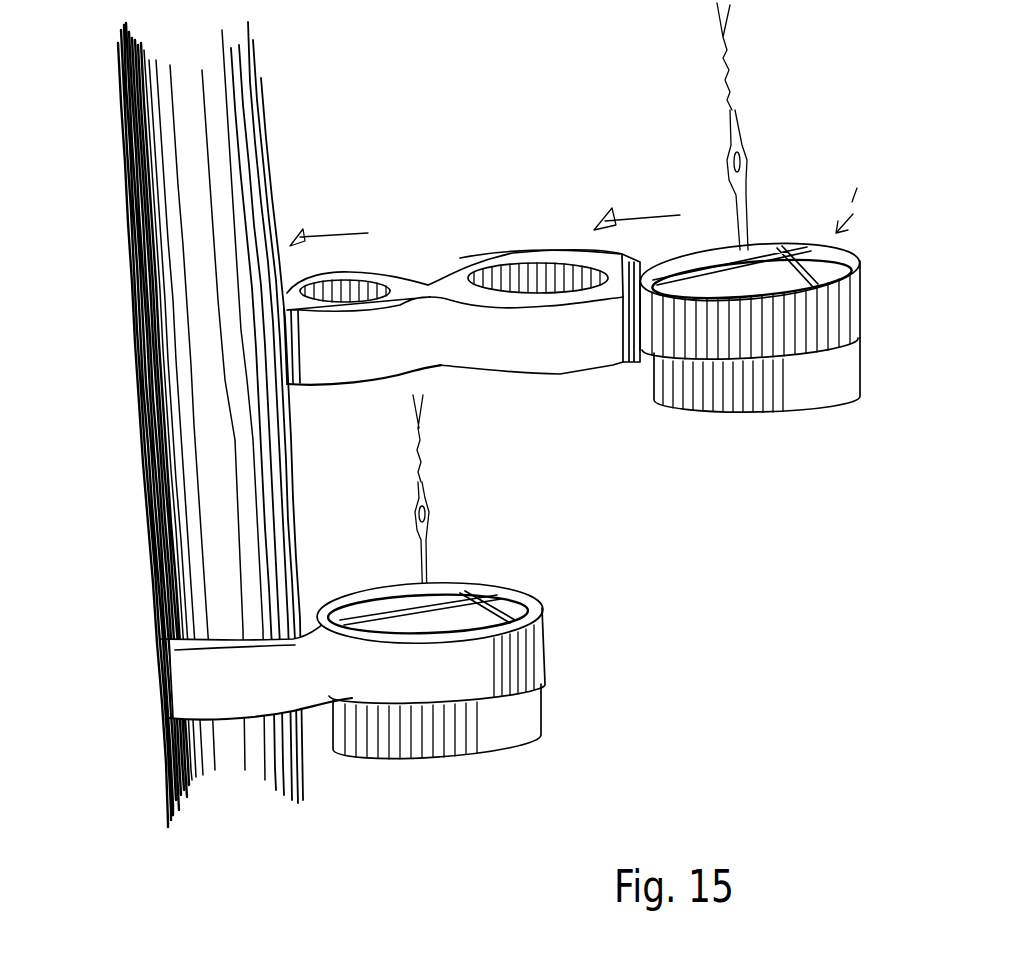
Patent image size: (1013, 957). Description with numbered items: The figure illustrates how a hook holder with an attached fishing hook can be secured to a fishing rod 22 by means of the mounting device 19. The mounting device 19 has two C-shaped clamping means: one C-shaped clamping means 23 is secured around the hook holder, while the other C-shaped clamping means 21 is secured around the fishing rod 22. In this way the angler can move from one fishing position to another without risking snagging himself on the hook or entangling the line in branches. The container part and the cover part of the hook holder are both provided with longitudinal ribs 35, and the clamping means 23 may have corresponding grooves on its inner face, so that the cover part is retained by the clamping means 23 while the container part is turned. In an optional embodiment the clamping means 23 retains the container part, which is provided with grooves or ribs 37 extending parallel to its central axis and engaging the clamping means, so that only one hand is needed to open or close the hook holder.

The mounting device 19 is at (400, 451).
The C-shaped clamping means 21 is at (337, 382).
The fishing rod 22 is at (200, 276).
The C-shaped clamping means 23 is at (562, 352).
The longitudinal ribs 35 is at (805, 343).
The grooves or ribs 37 is at (538, 248).